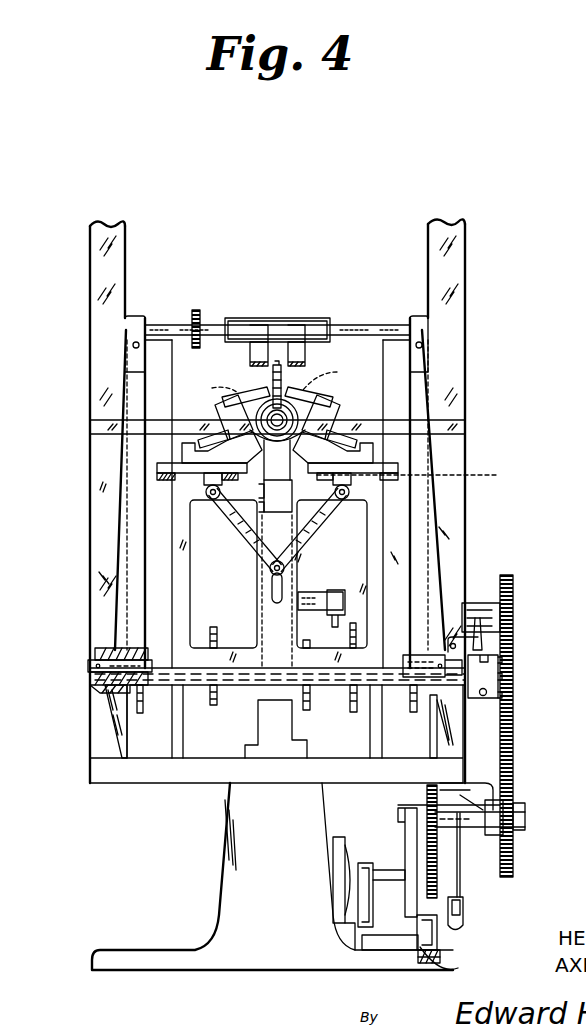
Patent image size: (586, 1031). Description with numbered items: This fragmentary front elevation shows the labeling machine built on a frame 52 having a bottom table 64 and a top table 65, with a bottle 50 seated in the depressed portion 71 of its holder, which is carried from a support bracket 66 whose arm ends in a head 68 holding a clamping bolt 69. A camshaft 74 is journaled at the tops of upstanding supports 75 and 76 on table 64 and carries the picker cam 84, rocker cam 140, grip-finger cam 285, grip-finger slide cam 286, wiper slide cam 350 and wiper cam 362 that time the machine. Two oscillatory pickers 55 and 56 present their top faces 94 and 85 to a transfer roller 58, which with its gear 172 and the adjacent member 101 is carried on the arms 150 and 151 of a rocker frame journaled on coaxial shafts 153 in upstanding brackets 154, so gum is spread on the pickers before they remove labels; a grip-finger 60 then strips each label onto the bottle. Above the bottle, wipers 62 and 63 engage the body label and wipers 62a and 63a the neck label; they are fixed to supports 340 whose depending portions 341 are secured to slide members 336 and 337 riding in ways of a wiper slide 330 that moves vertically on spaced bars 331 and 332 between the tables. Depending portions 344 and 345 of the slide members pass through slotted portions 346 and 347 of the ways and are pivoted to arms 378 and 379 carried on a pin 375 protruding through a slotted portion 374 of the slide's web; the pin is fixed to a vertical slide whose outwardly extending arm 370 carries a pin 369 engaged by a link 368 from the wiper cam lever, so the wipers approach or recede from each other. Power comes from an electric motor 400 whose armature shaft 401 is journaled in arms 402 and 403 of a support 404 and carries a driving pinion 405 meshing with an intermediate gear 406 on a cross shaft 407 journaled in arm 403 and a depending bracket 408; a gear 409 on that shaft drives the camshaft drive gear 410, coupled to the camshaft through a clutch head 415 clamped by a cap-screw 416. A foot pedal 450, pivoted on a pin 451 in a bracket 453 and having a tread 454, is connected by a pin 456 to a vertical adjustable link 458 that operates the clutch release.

The gear 172 is at (200, 311).
The picker top face 94 is at (258, 325).
The finger holder 85 is at (298, 338).
The transfer roller 58 is at (323, 320).
The guide rail 101 is at (360, 328).
The picker 55 is at (255, 357).
The picker 56 is at (308, 356).
The grip-finger 60 is at (263, 380).
The wiper 62 is at (262, 391).
The wiper 63 is at (303, 395).
The wiper 62a is at (214, 383).
The wiper 63a is at (334, 377).
The wiper support 340 is at (222, 402).
The depending portion 341 is at (228, 428).
The top table 65 is at (460, 428).
The bottle 50 is at (262, 440).
The depressed portion 71 is at (287, 444).
The slide member 336 is at (205, 457).
The slide member 337 is at (380, 456).
The slotted portion 346 is at (185, 477).
The slotted portion 347 is at (425, 473).
The depending portion 344 is at (206, 490).
The depending portion 345 is at (349, 493).
The frame 52 is at (453, 493).
The clamping bolt 69 is at (264, 492).
The head 68 is at (277, 574).
The rocker frame arm 151 is at (130, 556).
The rocker frame arm 150 is at (423, 558).
The arm 378 is at (242, 546).
The arm 379 is at (313, 553).
The pin 375 is at (269, 569).
The slotted portion 374 is at (271, 590).
The wiper slide 330 is at (185, 608).
The pin 369 is at (348, 603).
The outwardly extending arm 370 is at (330, 613).
The link 368 is at (340, 626).
The coaxial shafts 153 is at (90, 665).
The clutch head 415 is at (490, 668).
The camshaft drive gear 410 is at (507, 692).
The upstanding support 75 is at (118, 708).
The camshaft 74 is at (139, 715).
The picker cam 84 is at (148, 746).
The grip-finger slide cam 286 is at (216, 707).
The grip-finger cam 285 is at (186, 712).
The support bracket 66 is at (247, 745).
The wiper slide cam 350 is at (306, 712).
The wiper cam 362 is at (354, 716).
The rocker cam 140 is at (440, 722).
The upstanding support 76 is at (427, 726).
The upstanding brackets 154 is at (96, 739).
The bar 331 is at (176, 757).
The bottom table 64 is at (208, 768).
The bar 332 is at (377, 752).
The cap-screw 416 is at (492, 702).
The bracket 408 is at (483, 785).
The gear 409 is at (517, 787).
The intermediate gear 406 is at (427, 797).
The cross shaft 407 is at (467, 828).
The driving pinion 405 is at (440, 875).
The electric motor 400 is at (342, 851).
The armature shaft 401 is at (388, 870).
The arm 402 is at (358, 893).
The arm 403 is at (385, 926).
The bracket 453 is at (466, 898).
The adjustable link 458 is at (466, 904).
The pin 456 is at (468, 920).
The pin 451 is at (462, 930).
The foot pedal 450 is at (440, 947).
The support 404 is at (390, 950).
The tread 454 is at (420, 968).